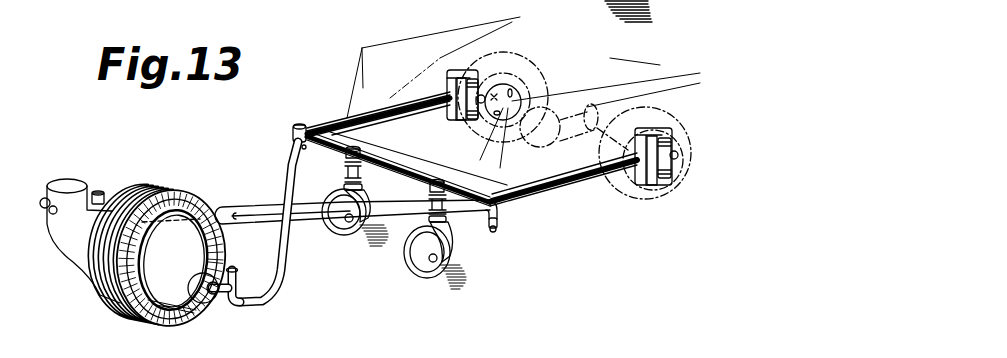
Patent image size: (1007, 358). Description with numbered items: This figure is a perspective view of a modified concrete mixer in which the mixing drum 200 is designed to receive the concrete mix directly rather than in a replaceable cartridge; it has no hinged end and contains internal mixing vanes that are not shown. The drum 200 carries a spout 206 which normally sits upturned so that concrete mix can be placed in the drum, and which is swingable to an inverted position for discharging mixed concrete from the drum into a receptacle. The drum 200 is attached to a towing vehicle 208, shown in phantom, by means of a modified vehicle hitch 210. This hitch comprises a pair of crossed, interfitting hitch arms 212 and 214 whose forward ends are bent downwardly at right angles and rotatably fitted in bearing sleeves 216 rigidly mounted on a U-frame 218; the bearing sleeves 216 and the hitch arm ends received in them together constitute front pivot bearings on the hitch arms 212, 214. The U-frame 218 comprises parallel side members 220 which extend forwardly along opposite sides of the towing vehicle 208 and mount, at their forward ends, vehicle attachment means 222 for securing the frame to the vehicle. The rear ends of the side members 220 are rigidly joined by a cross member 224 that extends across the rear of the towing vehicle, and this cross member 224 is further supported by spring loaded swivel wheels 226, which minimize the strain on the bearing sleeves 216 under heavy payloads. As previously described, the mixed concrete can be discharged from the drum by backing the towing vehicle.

The mixing drum 200 is at (177, 189).
The spout 206 is at (93, 179).
The towing vehicle 208 is at (523, 100).
The vehicle hitch 210 is at (440, 134).
The hitch arm 212 is at (249, 206).
The hitch arm 214 is at (284, 258).
The bearing sleeves 216 is at (302, 123).
The U-frame 218 is at (565, 199).
The side members 220 is at (365, 107).
The vehicle attachment means 222 is at (464, 63).
The cross member 224 is at (398, 167).
The swivel wheels 226 is at (351, 240).